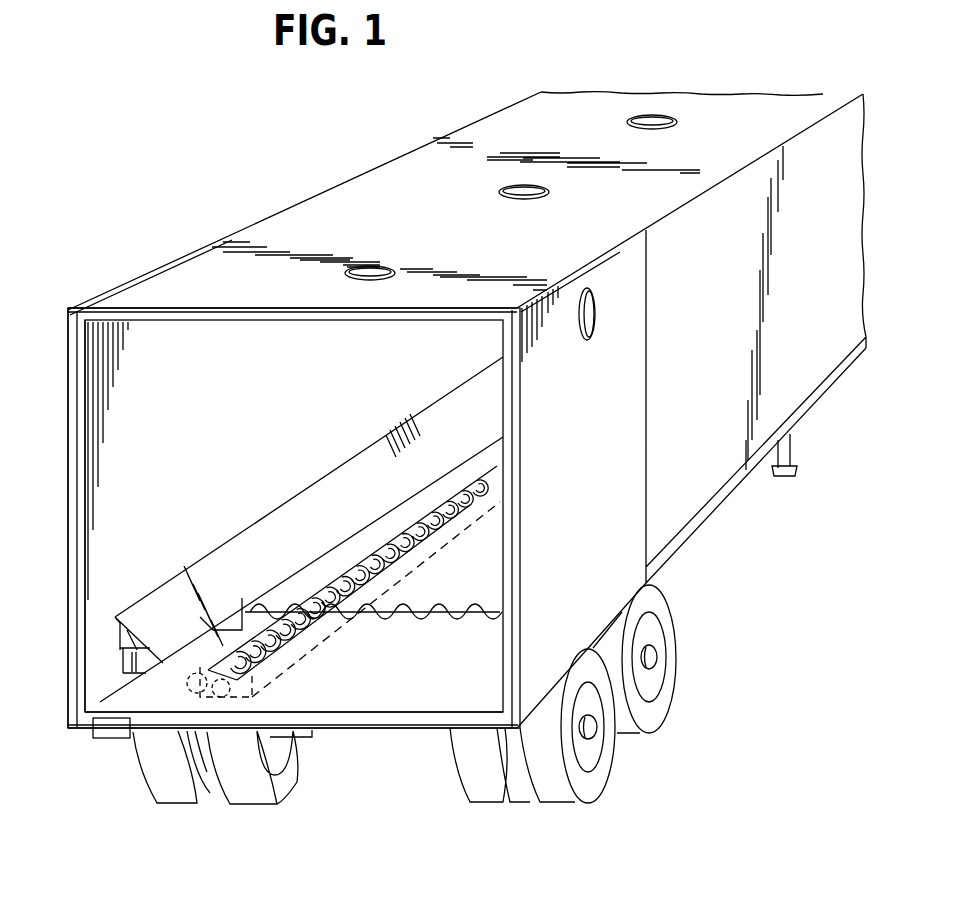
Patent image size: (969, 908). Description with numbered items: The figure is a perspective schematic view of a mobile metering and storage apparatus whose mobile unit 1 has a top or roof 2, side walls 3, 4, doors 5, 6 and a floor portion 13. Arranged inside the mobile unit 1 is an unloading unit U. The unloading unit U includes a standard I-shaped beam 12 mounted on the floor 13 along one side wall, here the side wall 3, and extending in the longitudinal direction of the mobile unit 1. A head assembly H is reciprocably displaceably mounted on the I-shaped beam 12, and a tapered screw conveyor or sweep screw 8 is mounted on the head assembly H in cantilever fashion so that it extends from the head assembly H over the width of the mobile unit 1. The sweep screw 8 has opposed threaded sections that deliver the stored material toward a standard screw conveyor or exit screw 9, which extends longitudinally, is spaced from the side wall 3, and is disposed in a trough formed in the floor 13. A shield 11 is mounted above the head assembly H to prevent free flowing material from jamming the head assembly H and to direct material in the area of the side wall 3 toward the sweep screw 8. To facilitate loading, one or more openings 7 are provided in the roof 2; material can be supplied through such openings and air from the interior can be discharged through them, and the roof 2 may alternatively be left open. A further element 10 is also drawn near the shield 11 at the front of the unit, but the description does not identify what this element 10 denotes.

The mobile unit 1 is at (327, 172).
The top or roof 2 is at (180, 285).
The side wall 3 is at (100, 433).
The side wall 4 is at (685, 230).
The door 5 is at (623, 402).
The door 6 is at (68, 370).
The opening 7 is at (633, 130).
The tapered screw conveyor or sweep screw 8 is at (460, 593).
The standard screw conveyor or exit screw 9 is at (458, 518).
The discharge chute 10 is at (242, 612).
The shield 11 is at (276, 517).
The I-shaped beam 12 is at (118, 663).
The floor portion 13 is at (362, 694).
The head assembly H is at (290, 586).
The unloading unit U is at (320, 432).